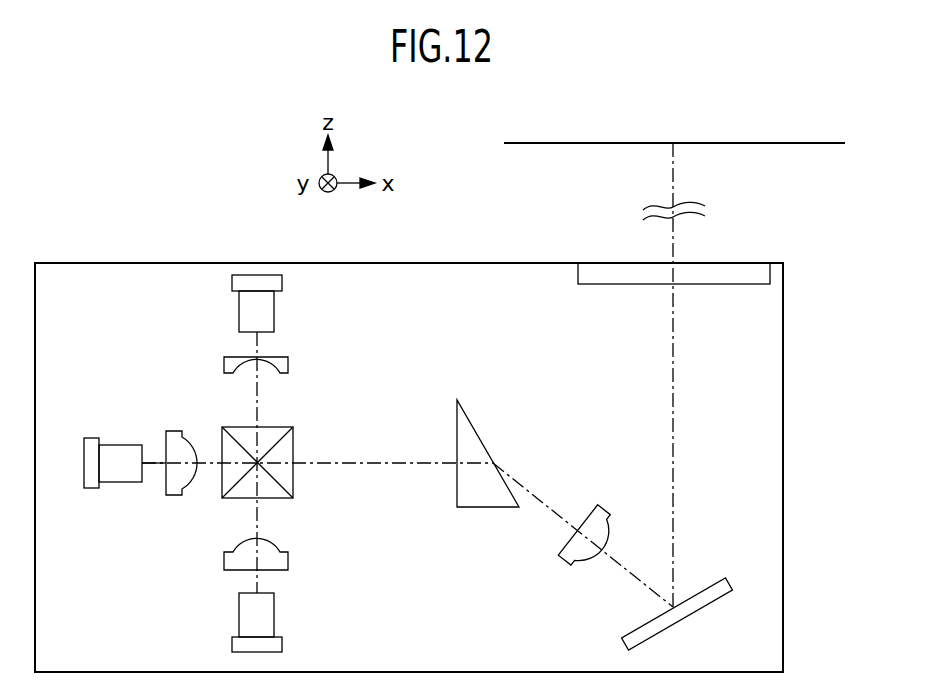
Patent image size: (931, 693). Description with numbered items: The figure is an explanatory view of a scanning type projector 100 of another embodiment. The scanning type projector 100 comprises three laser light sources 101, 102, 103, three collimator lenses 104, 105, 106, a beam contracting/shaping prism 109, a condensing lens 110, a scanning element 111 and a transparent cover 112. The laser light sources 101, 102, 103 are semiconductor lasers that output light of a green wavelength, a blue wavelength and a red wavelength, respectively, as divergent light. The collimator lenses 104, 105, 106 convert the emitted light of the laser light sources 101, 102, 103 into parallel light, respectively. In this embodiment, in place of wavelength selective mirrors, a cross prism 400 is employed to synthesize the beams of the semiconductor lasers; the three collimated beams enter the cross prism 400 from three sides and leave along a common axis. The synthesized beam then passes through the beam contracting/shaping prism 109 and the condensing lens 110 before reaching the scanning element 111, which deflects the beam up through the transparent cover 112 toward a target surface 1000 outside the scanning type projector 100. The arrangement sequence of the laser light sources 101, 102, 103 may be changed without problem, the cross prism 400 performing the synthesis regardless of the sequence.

The scanning type projector 100 is at (768, 637).
The object / measurement target surface 1000 is at (565, 143).
The laser light source 101 is at (117, 473).
The laser light source 102 is at (245, 612).
The laser light source 103 is at (269, 308).
The collimator lens 104 is at (175, 485).
The collimator lens 105 is at (237, 562).
The collimator lens 106 is at (288, 365).
The beam contracting/shaping prism 109 is at (473, 447).
The condensing lens 110 is at (583, 552).
The scanning element 111 is at (708, 590).
The transparent cover 112 is at (744, 272).
The cross prism 400 is at (288, 449).